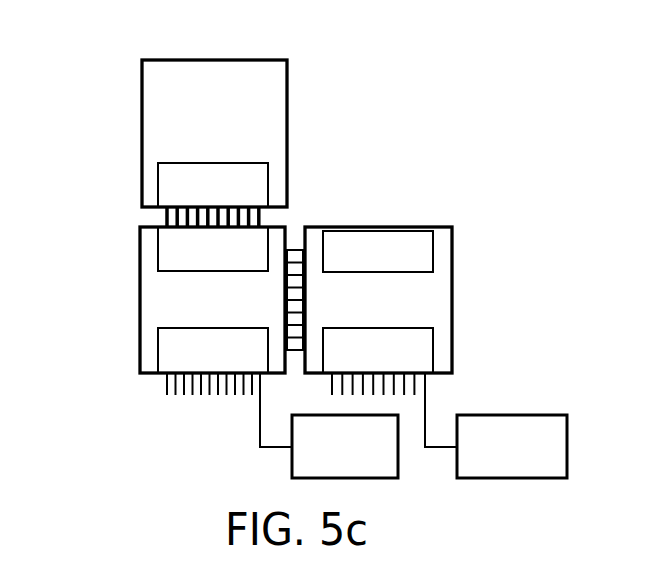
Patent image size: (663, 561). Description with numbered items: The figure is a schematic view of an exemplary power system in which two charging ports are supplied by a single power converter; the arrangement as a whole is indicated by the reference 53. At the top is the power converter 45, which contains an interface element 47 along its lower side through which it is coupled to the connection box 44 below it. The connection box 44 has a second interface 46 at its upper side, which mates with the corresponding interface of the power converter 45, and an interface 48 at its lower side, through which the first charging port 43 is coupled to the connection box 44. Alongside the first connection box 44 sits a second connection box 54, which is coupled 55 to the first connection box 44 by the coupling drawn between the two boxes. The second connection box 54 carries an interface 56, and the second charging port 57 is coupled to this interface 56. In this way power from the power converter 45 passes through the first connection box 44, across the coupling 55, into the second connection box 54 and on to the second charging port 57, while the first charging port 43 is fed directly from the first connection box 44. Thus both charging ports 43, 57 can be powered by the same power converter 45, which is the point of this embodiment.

The stacked semiconductor package assembly 53 is at (94, 81).
The power converter 45 is at (229, 122).
The semiconductor die of package 45 47 is at (168, 185).
The connection box 44 is at (229, 312).
The second interface 46 is at (163, 247).
The interface 48 is at (163, 350).
The coupling 55 is at (295, 247).
The second connection box 54 is at (395, 312).
The interface 56 is at (423, 350).
The charging port 43 is at (355, 456).
The second charging port 57 is at (522, 456).